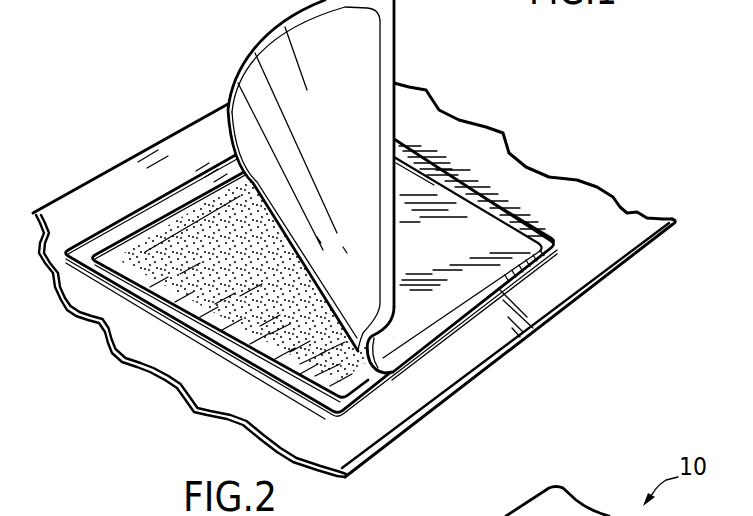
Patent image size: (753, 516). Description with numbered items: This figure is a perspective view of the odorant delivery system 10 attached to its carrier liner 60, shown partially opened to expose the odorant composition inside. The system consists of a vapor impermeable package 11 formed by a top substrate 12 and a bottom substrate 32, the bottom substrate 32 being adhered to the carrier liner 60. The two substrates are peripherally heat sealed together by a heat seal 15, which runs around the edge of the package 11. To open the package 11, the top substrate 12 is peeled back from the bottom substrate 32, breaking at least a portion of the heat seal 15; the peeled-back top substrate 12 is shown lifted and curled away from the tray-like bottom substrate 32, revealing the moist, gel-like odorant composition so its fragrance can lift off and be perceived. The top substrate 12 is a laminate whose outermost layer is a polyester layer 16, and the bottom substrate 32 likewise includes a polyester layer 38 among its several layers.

The odorant delivery system 10 is at (532, 112).
The package 11 is at (634, 214).
The top substrate 12 is at (395, 47).
The heat seal 15 is at (522, 217).
The polyester layer 16 is at (360, 80).
The bottom substrate 32 is at (190, 180).
The polyester layer 38 is at (257, 367).
The carrier liner 60 is at (568, 306).